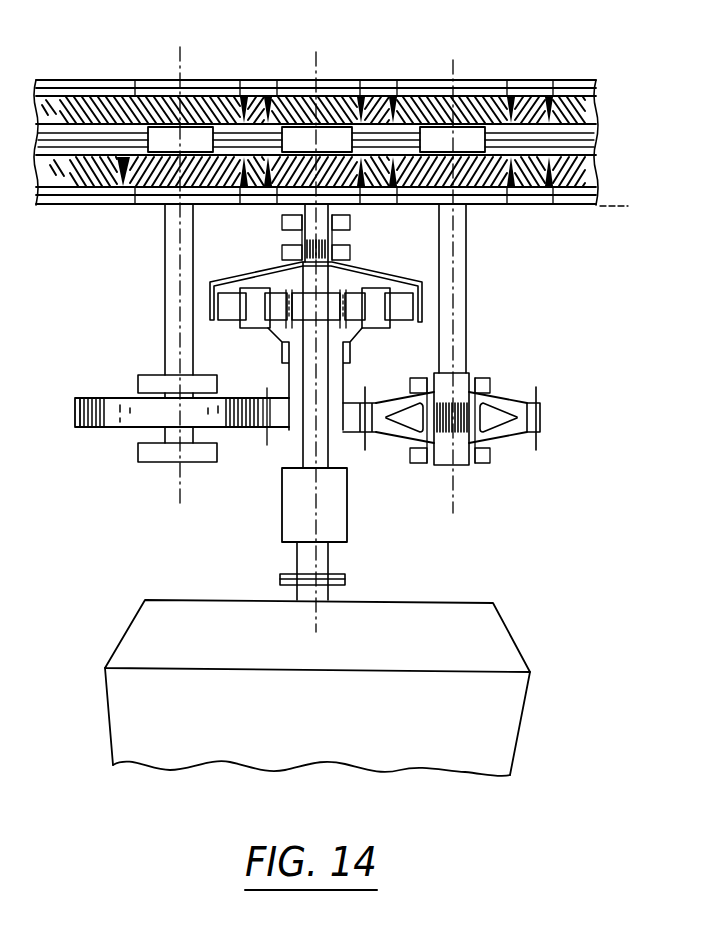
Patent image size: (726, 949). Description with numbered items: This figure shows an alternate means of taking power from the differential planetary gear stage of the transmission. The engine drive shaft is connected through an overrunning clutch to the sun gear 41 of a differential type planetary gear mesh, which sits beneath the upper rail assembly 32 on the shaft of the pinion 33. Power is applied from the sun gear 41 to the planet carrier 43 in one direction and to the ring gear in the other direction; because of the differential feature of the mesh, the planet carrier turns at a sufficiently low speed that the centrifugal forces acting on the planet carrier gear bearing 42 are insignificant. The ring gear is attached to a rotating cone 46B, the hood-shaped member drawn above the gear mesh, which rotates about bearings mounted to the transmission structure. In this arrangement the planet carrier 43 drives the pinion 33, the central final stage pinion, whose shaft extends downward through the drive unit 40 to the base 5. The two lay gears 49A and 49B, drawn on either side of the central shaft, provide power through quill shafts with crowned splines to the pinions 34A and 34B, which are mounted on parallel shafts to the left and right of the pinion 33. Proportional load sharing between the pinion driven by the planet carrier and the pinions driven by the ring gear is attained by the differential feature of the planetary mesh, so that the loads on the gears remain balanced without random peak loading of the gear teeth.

The base 5 is at (507, 630).
The rail assembly 32 is at (563, 80).
The pinion 33 is at (290, 78).
The pinion 34A is at (133, 78).
The pinion 34B is at (497, 78).
The motor 40 is at (348, 515).
The sun gear 41 is at (292, 295).
The planet carrier gear bearing 42 is at (392, 330).
The planet carrier 43 is at (390, 336).
The rotating cone 46B is at (396, 273).
The lay gear 49A is at (112, 428).
The lay gear 49B is at (543, 414).